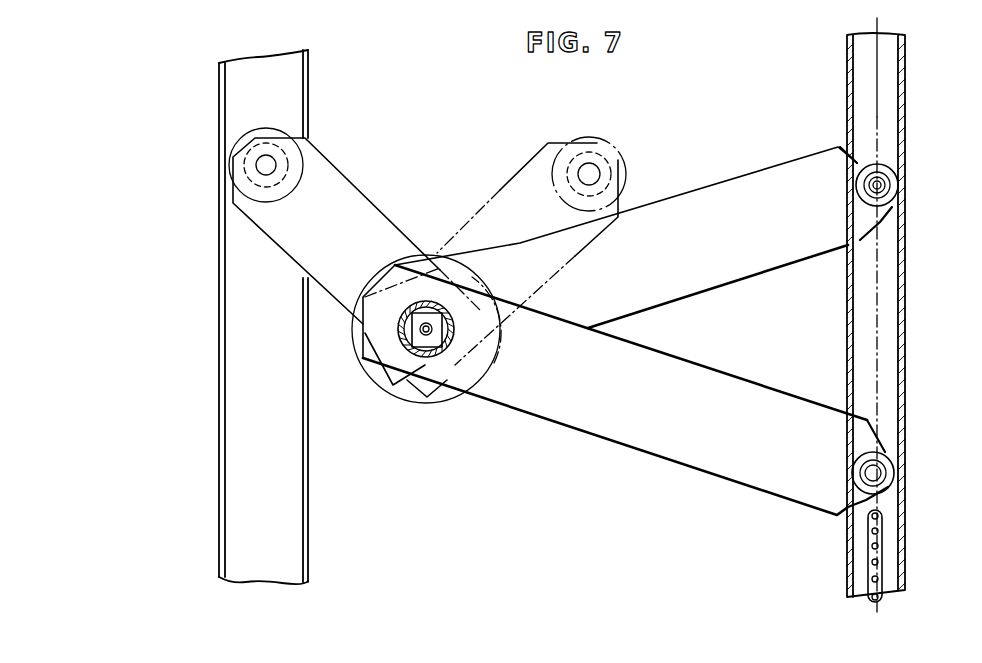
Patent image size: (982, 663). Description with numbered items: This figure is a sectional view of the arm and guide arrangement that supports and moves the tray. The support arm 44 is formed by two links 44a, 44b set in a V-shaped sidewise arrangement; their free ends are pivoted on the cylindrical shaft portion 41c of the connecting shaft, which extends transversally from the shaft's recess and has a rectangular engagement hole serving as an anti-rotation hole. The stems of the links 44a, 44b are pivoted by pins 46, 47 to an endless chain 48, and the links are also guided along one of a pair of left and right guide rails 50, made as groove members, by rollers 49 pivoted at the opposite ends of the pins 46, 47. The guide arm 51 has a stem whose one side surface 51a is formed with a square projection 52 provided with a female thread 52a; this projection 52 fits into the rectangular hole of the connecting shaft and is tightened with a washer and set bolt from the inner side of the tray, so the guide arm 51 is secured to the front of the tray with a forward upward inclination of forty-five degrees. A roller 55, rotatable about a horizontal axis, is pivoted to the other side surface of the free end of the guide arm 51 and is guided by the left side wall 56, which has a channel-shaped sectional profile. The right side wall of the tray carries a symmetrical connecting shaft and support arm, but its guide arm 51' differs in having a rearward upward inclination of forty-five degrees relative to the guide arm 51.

The left side wall 56 is at (234, 102).
The roller 55 is at (269, 129).
The guide arm 51 is at (357, 228).
The guide arm 51' is at (527, 226).
The side surface of the guide arm stem 51a is at (441, 387).
The square projection 52 is at (415, 318).
The female thread 52a is at (387, 354).
The cylindrical shaft portion 41c is at (424, 393).
The support arm 44 is at (615, 301).
The link 44a is at (707, 460).
The link 44b is at (717, 190).
The pin 46 is at (893, 175).
The pin 47 is at (888, 470).
The endless chain 48 is at (883, 567).
The roller 49 is at (896, 208).
The guide rail 50 is at (895, 112).